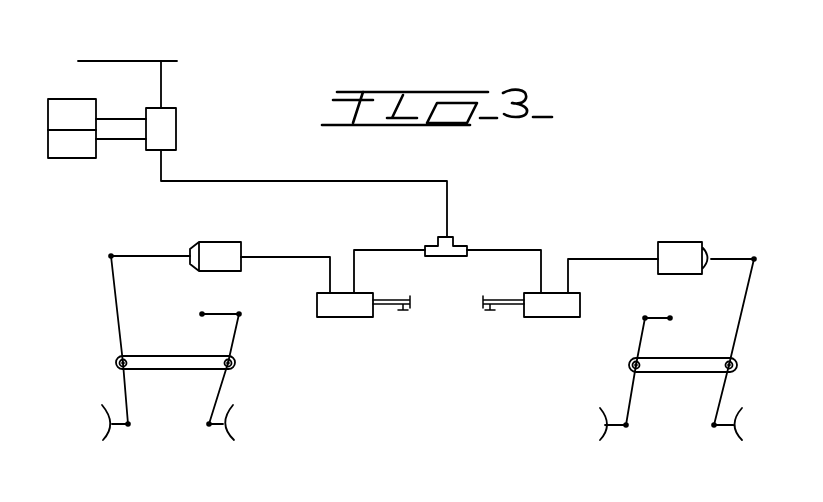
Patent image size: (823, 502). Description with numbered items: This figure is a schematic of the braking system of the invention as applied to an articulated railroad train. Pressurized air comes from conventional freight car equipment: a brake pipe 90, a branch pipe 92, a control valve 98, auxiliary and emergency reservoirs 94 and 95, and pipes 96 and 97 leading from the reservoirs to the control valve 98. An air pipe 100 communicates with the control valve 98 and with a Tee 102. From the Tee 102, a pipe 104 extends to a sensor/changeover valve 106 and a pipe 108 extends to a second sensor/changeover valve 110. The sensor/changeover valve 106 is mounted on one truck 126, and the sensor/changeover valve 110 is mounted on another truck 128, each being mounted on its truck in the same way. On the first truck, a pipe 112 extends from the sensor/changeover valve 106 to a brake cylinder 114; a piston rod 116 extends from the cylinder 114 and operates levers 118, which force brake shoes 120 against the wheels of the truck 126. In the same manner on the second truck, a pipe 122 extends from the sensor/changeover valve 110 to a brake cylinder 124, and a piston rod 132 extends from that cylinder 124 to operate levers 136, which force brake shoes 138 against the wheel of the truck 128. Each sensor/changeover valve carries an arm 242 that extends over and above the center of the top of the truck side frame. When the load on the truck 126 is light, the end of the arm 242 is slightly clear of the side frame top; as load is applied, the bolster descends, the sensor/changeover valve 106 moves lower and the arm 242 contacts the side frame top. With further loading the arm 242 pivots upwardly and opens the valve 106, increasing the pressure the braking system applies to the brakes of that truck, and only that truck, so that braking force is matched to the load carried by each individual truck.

The brake pipe 90 is at (115, 60).
The branch pipe 92 is at (163, 86).
The auxiliary reservoir 94 is at (72, 98).
The emergency reservoir 95 is at (72, 152).
The pipe 96 is at (114, 118).
The pipe 97 is at (113, 141).
The control valve 98 is at (177, 138).
The air pipe 100 is at (245, 181).
The Tee 102 is at (450, 248).
The pipe 104 is at (386, 250).
The sensor/changeover valve 106 is at (349, 303).
The pipe 108 is at (508, 250).
The sensor/changeover valve 110 is at (554, 312).
The pipe 112 is at (273, 257).
The brake cylinder 114 is at (220, 254).
The piston rod 116 is at (152, 256).
The levers 118 is at (108, 328).
The brake shoes 120 is at (105, 413).
The pipe 122 is at (605, 259).
The brake cylinder 124 is at (677, 250).
The truck 126 is at (167, 364).
The truck 128 is at (667, 367).
The piston rod 132 is at (722, 259).
The levers 136 is at (778, 300).
The brake shoes 138 is at (600, 414).
The arm 242 is at (394, 300).